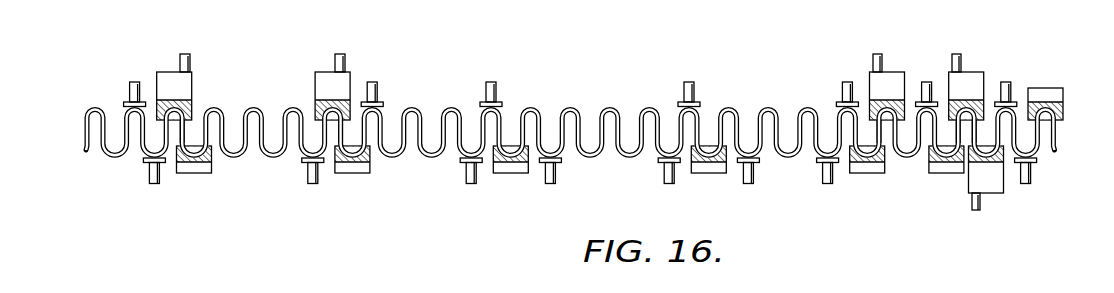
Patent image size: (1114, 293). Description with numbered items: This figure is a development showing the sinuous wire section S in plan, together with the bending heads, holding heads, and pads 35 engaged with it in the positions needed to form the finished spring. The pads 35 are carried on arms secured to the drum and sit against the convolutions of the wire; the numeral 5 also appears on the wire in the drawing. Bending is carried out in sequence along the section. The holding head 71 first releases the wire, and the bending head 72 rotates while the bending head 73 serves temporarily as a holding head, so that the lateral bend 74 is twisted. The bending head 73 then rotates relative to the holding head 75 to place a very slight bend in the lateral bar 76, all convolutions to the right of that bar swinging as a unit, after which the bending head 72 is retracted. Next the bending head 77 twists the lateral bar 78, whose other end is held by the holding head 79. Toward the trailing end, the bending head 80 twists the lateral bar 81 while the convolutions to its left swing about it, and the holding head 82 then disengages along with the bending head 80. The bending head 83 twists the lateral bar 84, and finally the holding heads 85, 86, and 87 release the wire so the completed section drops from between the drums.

The serpentine tube 5 is at (629, 158).
The pad 35 is at (301, 160).
The holding head 71 is at (1063, 95).
The bending head 72 is at (993, 183).
The bending head 73 is at (973, 77).
The lateral bend 74 is at (982, 127).
The holding head 75 is at (945, 167).
The lateral bar 76 is at (954, 130).
The bending head 77 is at (877, 82).
The lateral bar 78 is at (881, 130).
The holding head 79 is at (870, 167).
The bending head 80 is at (183, 84).
The lateral bar 81 is at (181, 136).
The holding head 82 is at (203, 164).
The bending head 83 is at (325, 84).
The lateral bar 84 is at (347, 130).
The holding head 85 is at (355, 168).
The holding head 86 is at (513, 167).
The holding head 87 is at (713, 168).